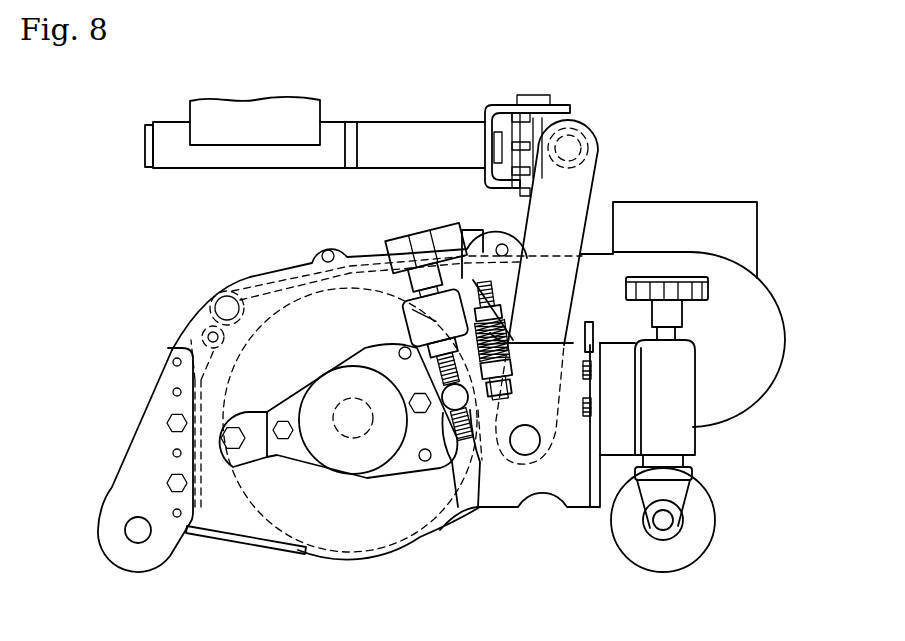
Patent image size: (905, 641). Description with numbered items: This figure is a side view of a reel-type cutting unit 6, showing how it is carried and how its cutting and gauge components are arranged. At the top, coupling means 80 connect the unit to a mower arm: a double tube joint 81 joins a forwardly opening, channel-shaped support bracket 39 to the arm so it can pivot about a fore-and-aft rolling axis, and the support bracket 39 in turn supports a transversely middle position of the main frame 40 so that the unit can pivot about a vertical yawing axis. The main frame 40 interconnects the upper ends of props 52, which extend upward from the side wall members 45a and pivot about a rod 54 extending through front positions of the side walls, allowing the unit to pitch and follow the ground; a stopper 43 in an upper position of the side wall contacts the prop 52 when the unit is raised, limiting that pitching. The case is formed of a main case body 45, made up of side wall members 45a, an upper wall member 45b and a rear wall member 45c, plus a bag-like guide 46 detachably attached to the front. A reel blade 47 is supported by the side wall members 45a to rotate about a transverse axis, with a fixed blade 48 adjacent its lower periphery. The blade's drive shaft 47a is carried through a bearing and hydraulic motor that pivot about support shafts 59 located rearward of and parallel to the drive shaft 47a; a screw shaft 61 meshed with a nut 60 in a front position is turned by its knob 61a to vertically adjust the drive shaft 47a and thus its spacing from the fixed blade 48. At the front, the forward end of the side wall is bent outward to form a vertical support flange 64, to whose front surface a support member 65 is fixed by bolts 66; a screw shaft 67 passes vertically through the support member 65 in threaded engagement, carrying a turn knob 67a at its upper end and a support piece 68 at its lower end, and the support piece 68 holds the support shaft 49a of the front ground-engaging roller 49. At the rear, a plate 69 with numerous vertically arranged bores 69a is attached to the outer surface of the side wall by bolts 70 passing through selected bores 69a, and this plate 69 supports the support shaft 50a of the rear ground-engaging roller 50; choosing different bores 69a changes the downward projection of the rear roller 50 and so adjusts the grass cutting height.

The reel-type cutting unit 6 is at (745, 163).
The support bracket 39 is at (487, 108).
The main frame 40 is at (590, 146).
The stopper 43 is at (594, 322).
The main case body 45 is at (258, 272).
The side wall member 45a is at (302, 302).
The upper wall member 45b is at (366, 268).
The rear wall member 45c is at (186, 324).
The guide 46 is at (773, 298).
The reel blade 47 is at (410, 541).
The drive shaft 47a is at (352, 438).
The fixed blade 48 is at (262, 548).
The front ground-engaging roller 49 is at (708, 516).
The support shaft 49a is at (666, 521).
The rear ground-engaging roller 50 is at (110, 517).
The support shaft 50a is at (137, 530).
The prop 52 is at (576, 212).
The rod 54 is at (524, 455).
The support shaft 59 is at (240, 431).
The nut 60 is at (463, 406).
The screw shaft 61 is at (462, 442).
The knob 61a is at (425, 243).
The support flange 64 is at (590, 506).
The support member 65 is at (687, 389).
The bolt 66 is at (586, 405).
The screw shaft 67 is at (668, 337).
The turn knob 67a is at (686, 277).
The support piece 68 is at (684, 488).
The plate 69 is at (132, 453).
The bore 69a is at (173, 391).
The bolt 70 is at (167, 483).
The coupling means 80 is at (385, 112).
The double tube joint 81 is at (255, 170).